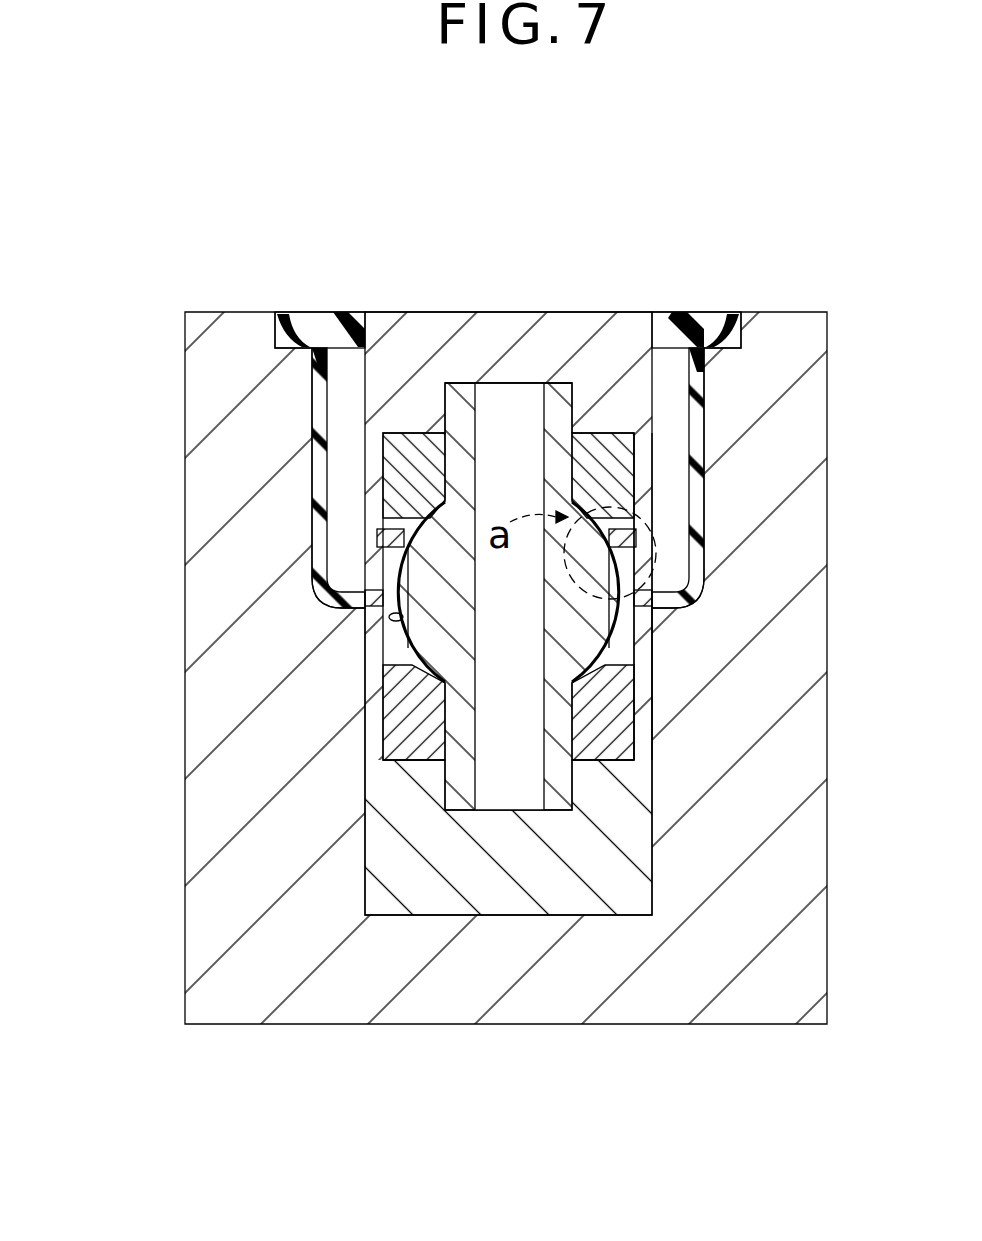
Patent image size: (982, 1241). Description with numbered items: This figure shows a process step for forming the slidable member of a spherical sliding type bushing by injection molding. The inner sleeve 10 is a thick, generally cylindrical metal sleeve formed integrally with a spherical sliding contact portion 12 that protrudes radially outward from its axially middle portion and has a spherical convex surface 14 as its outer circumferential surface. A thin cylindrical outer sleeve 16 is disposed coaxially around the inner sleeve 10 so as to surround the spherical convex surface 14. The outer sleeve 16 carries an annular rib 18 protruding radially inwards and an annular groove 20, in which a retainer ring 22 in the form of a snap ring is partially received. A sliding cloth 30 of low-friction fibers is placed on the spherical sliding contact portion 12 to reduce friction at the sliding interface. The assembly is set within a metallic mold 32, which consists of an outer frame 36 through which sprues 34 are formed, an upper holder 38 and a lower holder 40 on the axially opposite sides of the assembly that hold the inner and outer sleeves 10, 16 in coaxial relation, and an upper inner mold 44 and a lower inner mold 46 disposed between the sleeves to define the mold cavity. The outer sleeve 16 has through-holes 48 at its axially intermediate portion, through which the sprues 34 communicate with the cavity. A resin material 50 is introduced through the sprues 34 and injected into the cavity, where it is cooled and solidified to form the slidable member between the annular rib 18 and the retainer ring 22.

The inner sleeve 10 is at (456, 368).
The spherical sliding contact portion 12 is at (443, 623).
The spherical convex surface 14 is at (422, 512).
The outer sleeve 16 is at (655, 695).
The annular rib 18 is at (385, 690).
The annular groove 20 is at (380, 537).
The retainer ring 22 is at (622, 532).
The sliding cloth 30 is at (392, 618).
The metallic mold 32 is at (180, 357).
The sprues 34 is at (318, 403).
The outer frame 36 is at (780, 768).
The upper holder 38 is at (568, 325).
The lower holder 40 is at (428, 895).
The upper inner mold 44 is at (385, 465).
The lower inner mold 46 is at (400, 752).
The through-holes 48 is at (385, 600).
The resin material 50 is at (678, 325).